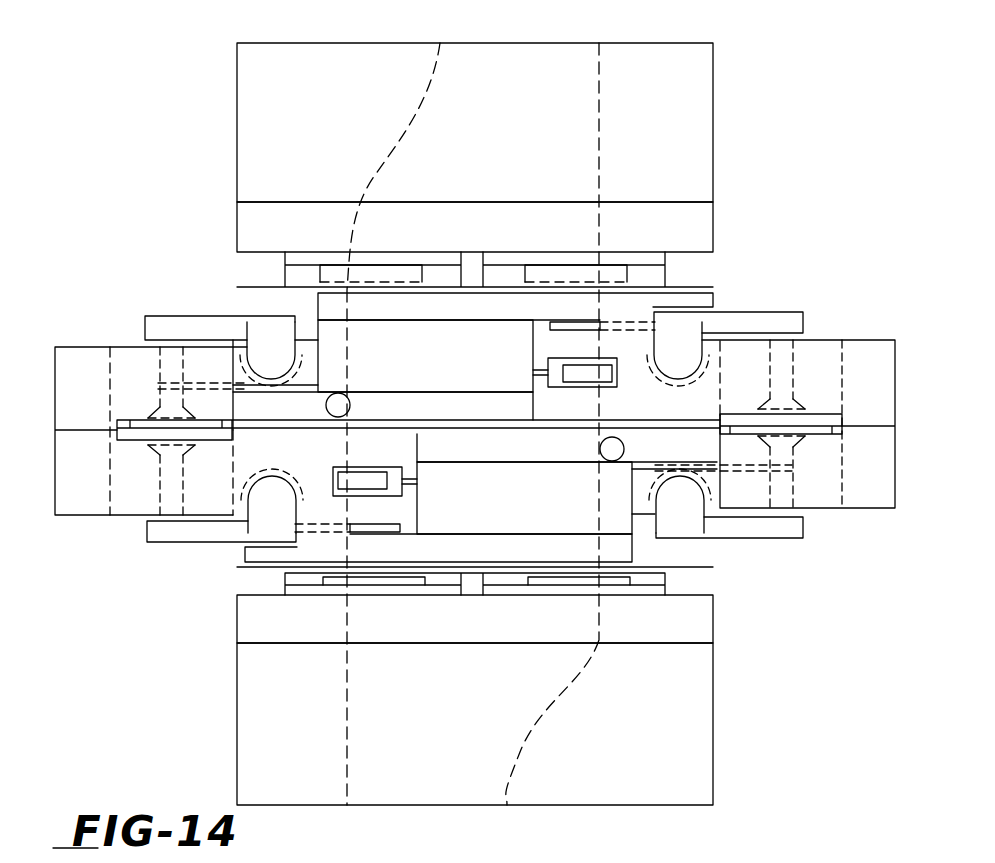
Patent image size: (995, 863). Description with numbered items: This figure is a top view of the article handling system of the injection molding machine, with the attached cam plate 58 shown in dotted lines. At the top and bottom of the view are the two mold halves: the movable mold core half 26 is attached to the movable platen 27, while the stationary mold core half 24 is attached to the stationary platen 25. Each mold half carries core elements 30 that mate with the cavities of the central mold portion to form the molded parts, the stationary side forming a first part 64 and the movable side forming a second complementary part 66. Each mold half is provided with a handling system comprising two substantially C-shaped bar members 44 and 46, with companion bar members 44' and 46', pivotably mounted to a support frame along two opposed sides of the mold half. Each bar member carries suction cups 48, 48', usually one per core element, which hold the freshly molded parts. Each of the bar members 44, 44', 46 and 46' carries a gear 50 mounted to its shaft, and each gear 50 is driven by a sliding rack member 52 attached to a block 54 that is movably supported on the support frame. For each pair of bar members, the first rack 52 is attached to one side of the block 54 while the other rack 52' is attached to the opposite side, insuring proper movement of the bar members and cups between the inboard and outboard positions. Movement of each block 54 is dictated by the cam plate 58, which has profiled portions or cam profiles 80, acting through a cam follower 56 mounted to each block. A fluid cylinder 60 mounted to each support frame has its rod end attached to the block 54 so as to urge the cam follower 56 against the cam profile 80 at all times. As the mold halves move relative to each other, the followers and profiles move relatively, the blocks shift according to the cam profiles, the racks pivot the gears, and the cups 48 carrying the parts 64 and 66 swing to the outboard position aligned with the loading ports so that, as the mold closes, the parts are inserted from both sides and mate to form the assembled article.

The stationary mold core half 24 is at (458, 630).
The stationary platen 25 is at (461, 761).
The movable mold core half 26 is at (576, 236).
The movable platen 27 is at (665, 126).
The core elements 30 is at (617, 578).
The C-shaped bar member 44 is at (175, 389).
The C-shaped bar member 44' is at (195, 566).
The C-shaped bar member 46 is at (774, 386).
The C-shaped bar member 46' is at (745, 549).
The suction cup 48 is at (798, 407).
The suction cup 48' is at (775, 495).
The gear 50 is at (264, 326).
The sliding rack member 52 is at (502, 323).
The rack 52' is at (452, 422).
The block 54 is at (460, 357).
The cam follower 56 is at (336, 418).
The cam plate 58 is at (388, 698).
The fluid cylinder 60 is at (592, 387).
The first part 64 is at (128, 424).
The second complementary part 66 is at (128, 440).
The cam profile 80 is at (382, 153).